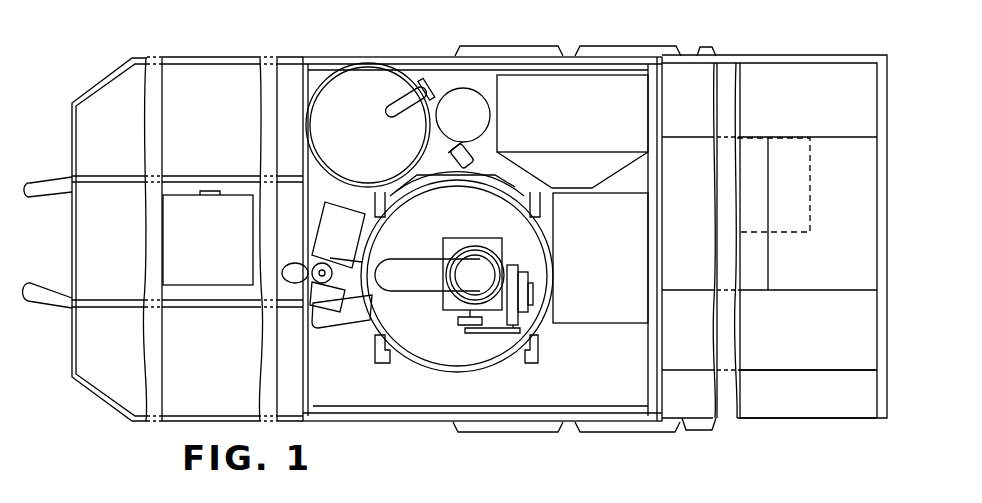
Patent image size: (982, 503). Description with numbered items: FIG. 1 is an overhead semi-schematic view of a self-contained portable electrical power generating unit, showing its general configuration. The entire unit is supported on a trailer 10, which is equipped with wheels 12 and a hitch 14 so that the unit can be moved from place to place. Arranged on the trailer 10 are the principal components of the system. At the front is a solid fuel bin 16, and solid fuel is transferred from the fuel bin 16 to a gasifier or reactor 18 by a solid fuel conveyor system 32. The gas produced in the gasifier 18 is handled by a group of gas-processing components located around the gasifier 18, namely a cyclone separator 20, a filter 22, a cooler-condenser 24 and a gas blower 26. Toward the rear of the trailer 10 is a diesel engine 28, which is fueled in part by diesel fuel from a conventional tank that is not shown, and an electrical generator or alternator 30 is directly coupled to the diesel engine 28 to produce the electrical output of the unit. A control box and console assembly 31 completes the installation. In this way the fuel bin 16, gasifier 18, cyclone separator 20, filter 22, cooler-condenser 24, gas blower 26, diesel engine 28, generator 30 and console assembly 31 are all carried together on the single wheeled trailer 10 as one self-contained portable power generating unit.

The trailer 10 is at (85, 417).
The wheels 12 is at (595, 424).
The hitch 14 is at (50, 185).
The solid fuel bin 16 is at (190, 358).
The gasifier or reactor 18 is at (478, 371).
The cyclone separator 20 is at (458, 105).
The filter 22 is at (324, 127).
The cooler-condenser 24 is at (552, 119).
The gas blower 26 is at (575, 263).
The diesel engine 28 is at (670, 263).
The electrical generator or alternator 30 is at (808, 263).
The control box and console assembly 31 is at (820, 402).
The solid fuel conveyor system 32 is at (397, 280).